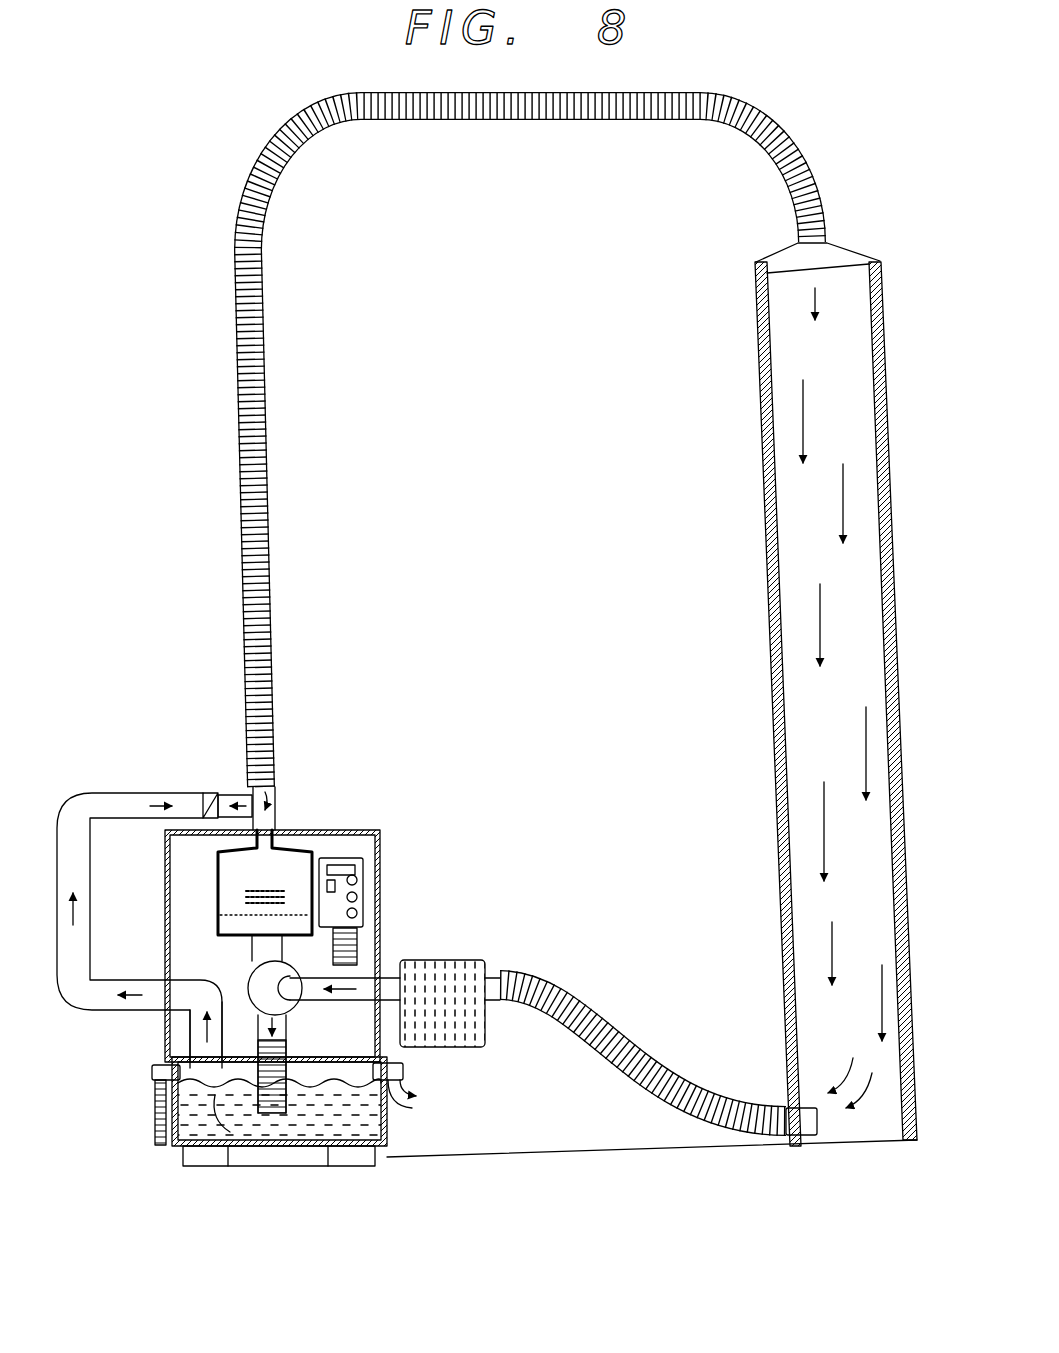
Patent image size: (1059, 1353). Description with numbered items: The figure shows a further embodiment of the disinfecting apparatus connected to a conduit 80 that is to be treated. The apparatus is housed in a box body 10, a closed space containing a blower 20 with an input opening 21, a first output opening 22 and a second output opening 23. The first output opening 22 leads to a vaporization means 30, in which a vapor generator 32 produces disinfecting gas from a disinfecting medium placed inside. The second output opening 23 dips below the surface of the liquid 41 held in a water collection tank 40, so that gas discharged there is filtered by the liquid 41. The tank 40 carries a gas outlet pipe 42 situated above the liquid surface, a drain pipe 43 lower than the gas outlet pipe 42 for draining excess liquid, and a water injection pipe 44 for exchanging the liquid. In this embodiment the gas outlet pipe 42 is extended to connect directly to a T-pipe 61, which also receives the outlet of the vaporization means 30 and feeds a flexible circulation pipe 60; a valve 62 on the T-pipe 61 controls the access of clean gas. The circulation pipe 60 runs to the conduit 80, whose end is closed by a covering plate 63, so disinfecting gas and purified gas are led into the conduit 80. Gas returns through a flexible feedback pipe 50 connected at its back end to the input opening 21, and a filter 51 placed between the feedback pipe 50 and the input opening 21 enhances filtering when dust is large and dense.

The box body 10 is at (168, 895).
The blower 20 is at (250, 985).
The input opening 21 is at (310, 990).
The first output opening 22 is at (258, 962).
The second output opening 23 is at (284, 1036).
The vaporization means 30 is at (165, 840).
The vapor generator 32 is at (248, 892).
The water collection tank 40 is at (147, 1145).
The liquid 41 is at (155, 1118).
The gas outlet pipe 42 is at (213, 1040).
The drain pipe 43 is at (150, 1086).
The water injection pipe 44 is at (405, 1082).
The feedback pipe 50 is at (540, 970).
The filter 51 is at (435, 963).
The circulation pipe 60 is at (240, 600).
The T-pipe 61 is at (244, 793).
The valve 62 is at (210, 795).
The covering plate 63 is at (795, 250).
The conduit 80 is at (760, 505).